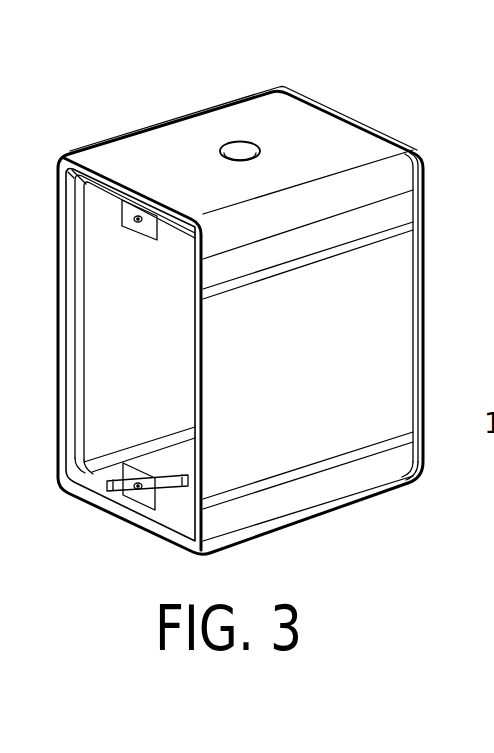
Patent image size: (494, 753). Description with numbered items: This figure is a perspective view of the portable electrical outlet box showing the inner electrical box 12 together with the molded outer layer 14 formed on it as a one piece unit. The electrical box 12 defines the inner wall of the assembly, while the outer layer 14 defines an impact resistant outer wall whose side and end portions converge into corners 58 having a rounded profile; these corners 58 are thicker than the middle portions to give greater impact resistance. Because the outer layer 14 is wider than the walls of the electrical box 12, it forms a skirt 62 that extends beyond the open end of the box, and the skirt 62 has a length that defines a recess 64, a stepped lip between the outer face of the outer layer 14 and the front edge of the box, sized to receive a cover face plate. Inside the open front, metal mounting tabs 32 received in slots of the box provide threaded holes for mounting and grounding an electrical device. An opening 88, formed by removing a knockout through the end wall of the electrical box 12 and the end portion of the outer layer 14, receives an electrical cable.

The electrical box 12 is at (100, 391).
The outer layer 14 is at (381, 329).
The mounting tab 32 is at (133, 238).
The corners 58 is at (158, 128).
The skirt 62 is at (70, 483).
The recess 64 is at (63, 333).
The opening 88 is at (240, 147).